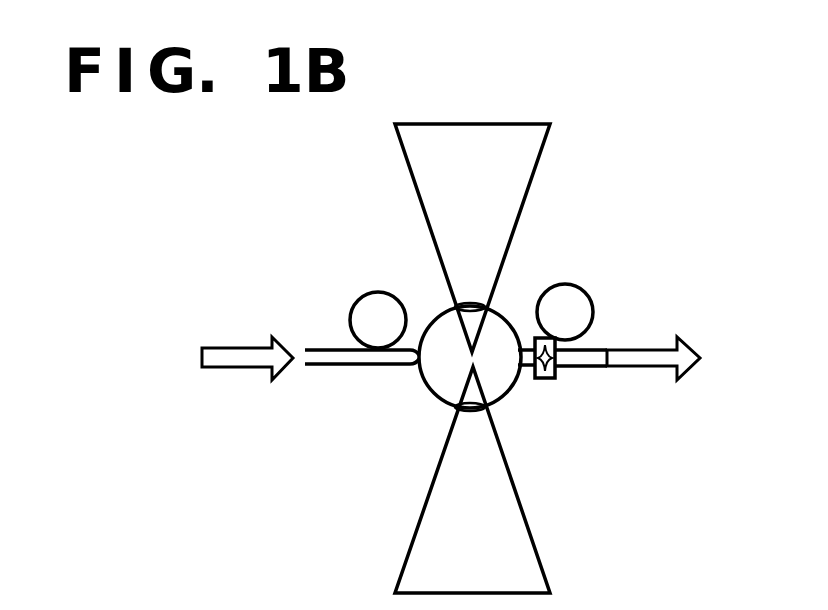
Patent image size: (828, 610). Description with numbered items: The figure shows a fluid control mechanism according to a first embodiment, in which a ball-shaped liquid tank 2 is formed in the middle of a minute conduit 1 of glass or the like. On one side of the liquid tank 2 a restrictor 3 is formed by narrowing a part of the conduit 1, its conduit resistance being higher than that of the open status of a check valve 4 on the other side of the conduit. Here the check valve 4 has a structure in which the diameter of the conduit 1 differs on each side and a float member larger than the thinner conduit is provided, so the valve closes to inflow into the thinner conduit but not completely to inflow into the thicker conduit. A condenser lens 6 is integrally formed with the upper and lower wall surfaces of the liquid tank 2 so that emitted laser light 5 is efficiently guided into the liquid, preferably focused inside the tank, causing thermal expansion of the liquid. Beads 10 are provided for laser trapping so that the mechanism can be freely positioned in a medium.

The conduit 1 is at (326, 367).
The liquid tank 2 is at (443, 388).
The restrictor 3 is at (412, 367).
The check valve 4 is at (550, 380).
The laser light 5 is at (475, 135).
The condenser lens 6 is at (458, 305).
The bead 10 is at (577, 301).